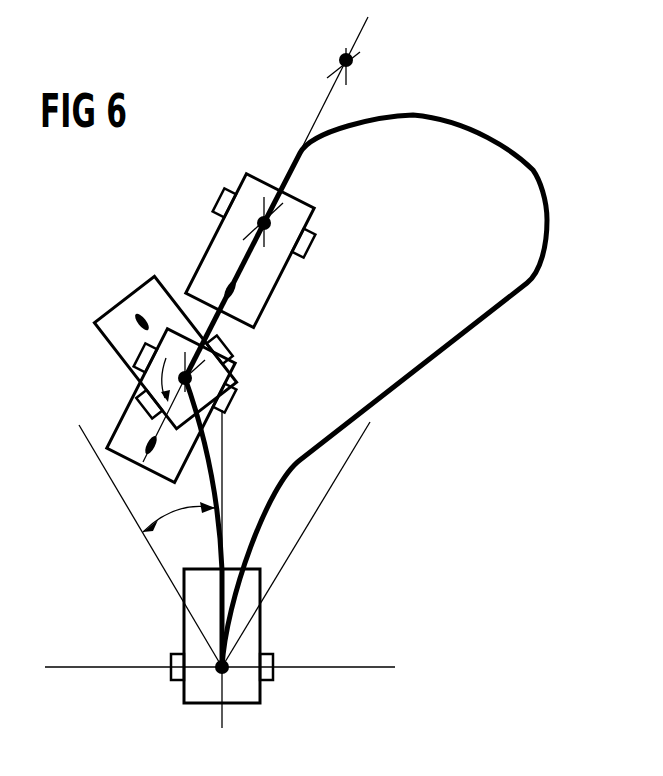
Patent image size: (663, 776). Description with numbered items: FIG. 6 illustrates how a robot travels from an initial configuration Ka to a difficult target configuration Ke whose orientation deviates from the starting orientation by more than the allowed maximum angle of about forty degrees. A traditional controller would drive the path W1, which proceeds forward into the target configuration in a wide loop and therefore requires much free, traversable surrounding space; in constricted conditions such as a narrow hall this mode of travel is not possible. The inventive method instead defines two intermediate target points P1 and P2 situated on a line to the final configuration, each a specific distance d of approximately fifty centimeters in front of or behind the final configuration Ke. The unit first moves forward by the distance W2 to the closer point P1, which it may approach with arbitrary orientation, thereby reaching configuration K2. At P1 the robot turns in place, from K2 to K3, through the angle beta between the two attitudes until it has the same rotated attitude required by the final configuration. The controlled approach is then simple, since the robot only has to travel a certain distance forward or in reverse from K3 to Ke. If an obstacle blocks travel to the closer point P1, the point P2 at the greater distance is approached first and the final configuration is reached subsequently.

The initial configuration Ka is at (250, 693).
The target configuration Ke is at (252, 185).
The intermediate configuration K2 is at (150, 292).
The rotated intermediate configuration K3 is at (127, 427).
The path of traditional controller W1 is at (406, 391).
The forward travel distance W2 is at (208, 465).
The specific distance d is at (307, 137).
The first intermediate target point P1 is at (198, 382).
The second intermediate target point P2 is at (352, 62).
The steering angle beta is at (150, 504).